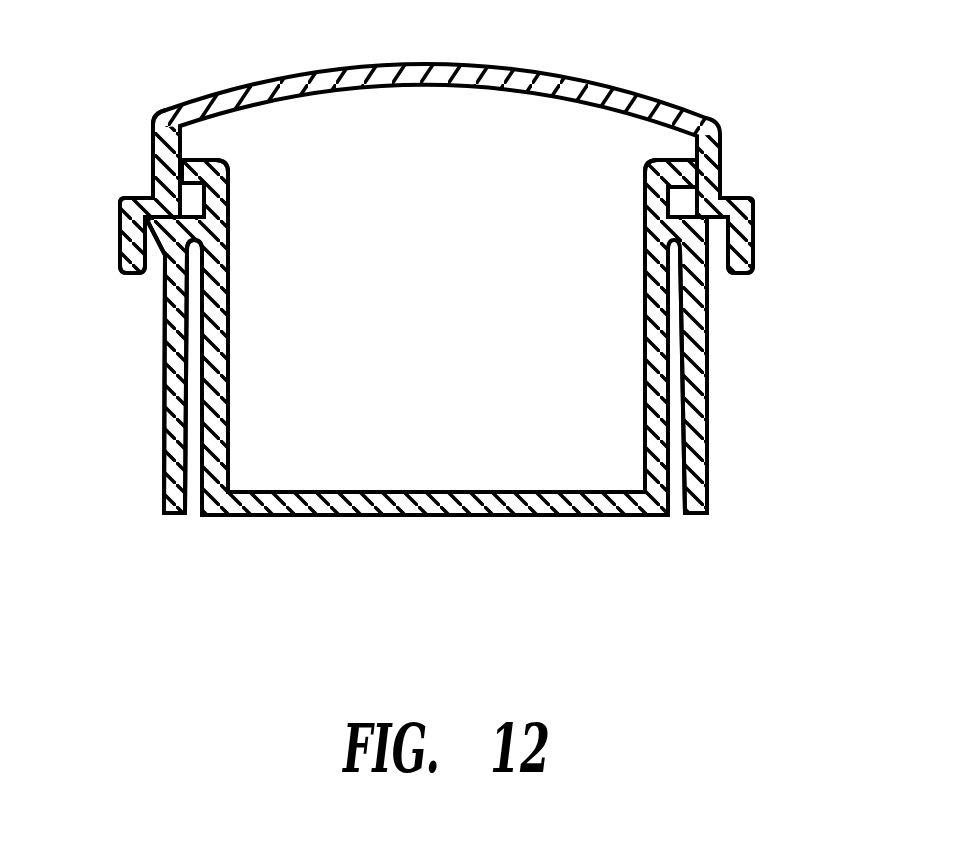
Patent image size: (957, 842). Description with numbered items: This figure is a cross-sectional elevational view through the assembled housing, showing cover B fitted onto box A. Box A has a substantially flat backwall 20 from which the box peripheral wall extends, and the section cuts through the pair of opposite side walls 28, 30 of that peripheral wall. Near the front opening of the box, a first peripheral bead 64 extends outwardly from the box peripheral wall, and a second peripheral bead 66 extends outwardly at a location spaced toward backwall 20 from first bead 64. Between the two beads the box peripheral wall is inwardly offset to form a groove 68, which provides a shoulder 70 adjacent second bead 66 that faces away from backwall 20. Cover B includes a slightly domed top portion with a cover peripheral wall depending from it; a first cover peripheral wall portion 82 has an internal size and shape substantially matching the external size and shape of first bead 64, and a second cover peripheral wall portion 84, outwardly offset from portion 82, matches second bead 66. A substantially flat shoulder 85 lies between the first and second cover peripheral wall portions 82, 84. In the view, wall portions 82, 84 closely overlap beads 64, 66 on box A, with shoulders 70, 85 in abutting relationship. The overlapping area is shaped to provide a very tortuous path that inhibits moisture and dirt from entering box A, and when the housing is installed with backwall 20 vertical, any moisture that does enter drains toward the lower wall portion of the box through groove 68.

The backwall 20 is at (470, 513).
The side wall 28 is at (164, 400).
The side wall 30 is at (708, 350).
The first peripheral bead 64 is at (155, 128).
The second peripheral bead 66 is at (150, 236).
The groove 68 is at (228, 191).
The shoulder 70 is at (663, 203).
The first cover peripheral wall portion 82 is at (153, 167).
The second cover peripheral wall portion 84 is at (120, 228).
The shoulder 85 is at (717, 183).
The box A is at (255, 515).
The cover B is at (607, 85).